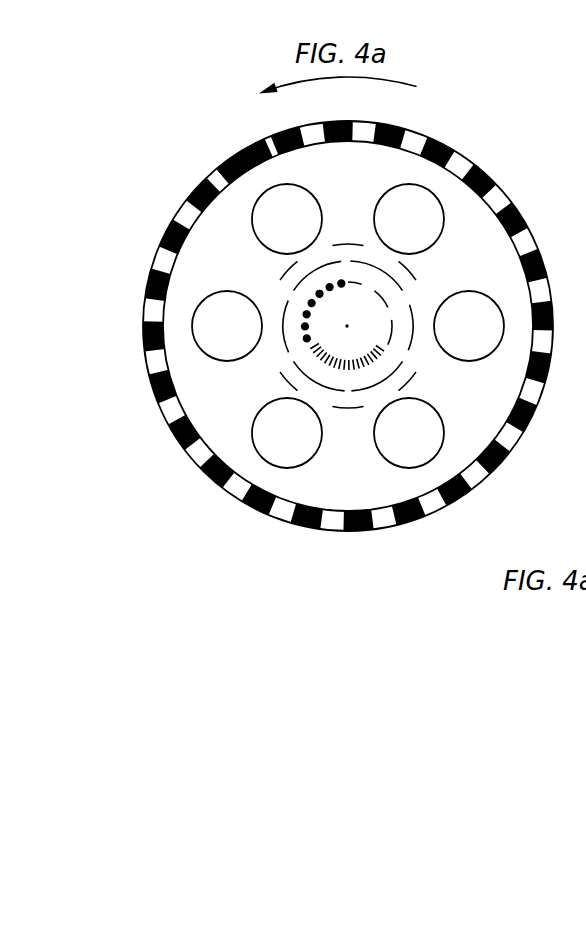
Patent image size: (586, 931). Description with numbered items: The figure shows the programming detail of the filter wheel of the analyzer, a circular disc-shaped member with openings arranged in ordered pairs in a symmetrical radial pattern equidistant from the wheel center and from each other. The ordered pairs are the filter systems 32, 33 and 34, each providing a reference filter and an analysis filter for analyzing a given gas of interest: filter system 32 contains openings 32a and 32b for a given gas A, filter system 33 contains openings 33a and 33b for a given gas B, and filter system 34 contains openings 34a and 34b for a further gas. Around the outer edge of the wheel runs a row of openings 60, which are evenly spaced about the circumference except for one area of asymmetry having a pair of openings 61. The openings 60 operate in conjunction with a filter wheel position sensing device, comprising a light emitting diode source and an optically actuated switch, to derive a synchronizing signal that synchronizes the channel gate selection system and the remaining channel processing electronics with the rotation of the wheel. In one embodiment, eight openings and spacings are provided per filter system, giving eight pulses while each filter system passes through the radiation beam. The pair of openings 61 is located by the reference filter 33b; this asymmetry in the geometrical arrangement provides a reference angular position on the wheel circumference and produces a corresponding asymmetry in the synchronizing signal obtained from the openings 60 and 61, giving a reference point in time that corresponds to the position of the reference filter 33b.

The filter system 32 is at (480, 276).
The opening 32a is at (435, 194).
The opening 32b is at (494, 351).
The filter system 33 is at (212, 272).
The opening 33a is at (193, 325).
The reference filter 33b is at (253, 223).
The filter system 34 is at (340, 471).
The opening 34a is at (420, 466).
The opening 34b is at (262, 458).
The openings 60 is at (357, 354).
The pair of openings 61 is at (267, 134).